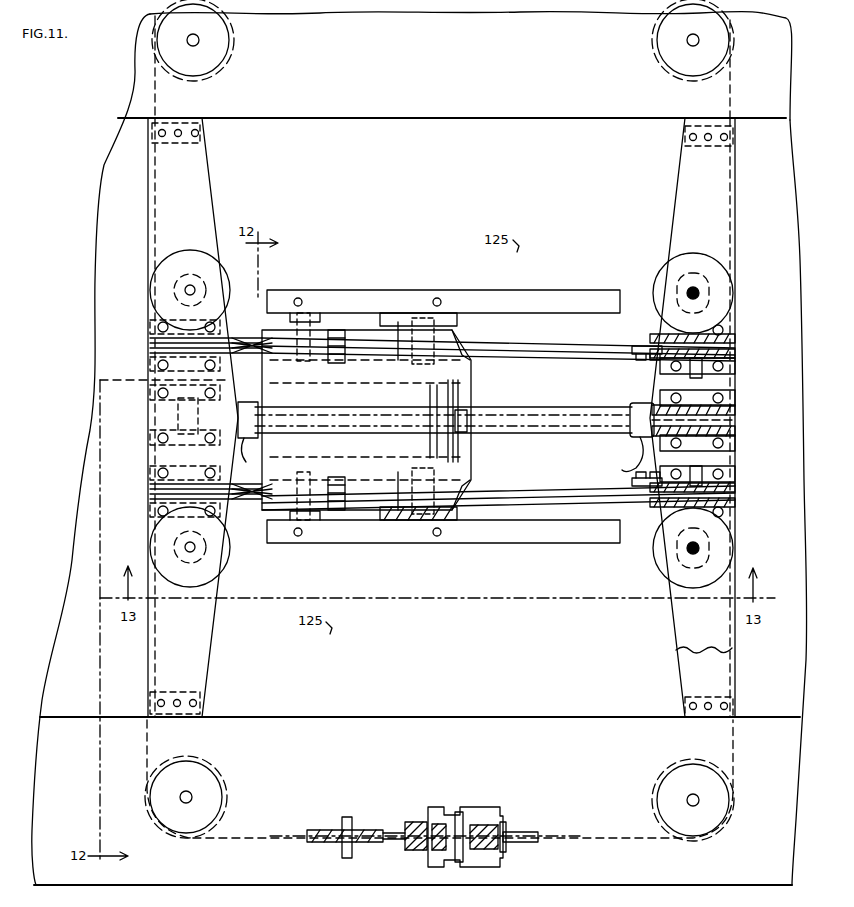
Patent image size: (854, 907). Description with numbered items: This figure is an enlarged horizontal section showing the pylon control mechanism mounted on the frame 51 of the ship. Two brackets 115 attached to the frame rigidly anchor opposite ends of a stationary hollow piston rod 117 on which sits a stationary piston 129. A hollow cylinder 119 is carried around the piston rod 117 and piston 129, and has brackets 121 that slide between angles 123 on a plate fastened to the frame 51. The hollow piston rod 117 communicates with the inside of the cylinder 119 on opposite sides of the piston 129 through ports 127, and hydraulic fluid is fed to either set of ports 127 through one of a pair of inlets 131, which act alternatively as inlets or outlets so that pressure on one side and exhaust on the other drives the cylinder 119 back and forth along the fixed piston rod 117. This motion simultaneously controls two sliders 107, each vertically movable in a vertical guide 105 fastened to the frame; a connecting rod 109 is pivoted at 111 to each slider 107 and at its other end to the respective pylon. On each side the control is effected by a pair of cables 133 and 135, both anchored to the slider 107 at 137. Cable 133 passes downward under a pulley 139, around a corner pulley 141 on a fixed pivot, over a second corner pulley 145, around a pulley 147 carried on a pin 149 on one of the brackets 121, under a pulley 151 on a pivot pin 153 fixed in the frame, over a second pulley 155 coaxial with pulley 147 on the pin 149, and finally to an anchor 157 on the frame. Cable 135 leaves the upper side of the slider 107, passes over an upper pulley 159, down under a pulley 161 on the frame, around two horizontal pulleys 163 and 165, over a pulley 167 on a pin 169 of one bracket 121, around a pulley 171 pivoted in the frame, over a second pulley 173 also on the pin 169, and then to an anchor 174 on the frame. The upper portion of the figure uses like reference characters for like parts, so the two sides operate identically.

The frame 51 is at (446, 120).
The vertical guide 105 is at (408, 822).
The slider 107 is at (478, 812).
The connecting rod 109 is at (504, 842).
The pivot 111 is at (490, 818).
The bracket 115 is at (150, 437).
The hollow piston rod 117 is at (545, 408).
The hollow cylinder 119 is at (356, 392).
The bracket 121 is at (398, 322).
The angle 123 is at (352, 297).
The port 127 is at (420, 420).
The piston 129 is at (470, 396).
The inlet 131 is at (262, 450).
The cable 133 is at (737, 220).
The cable 135 is at (153, 190).
The anchor 137 is at (460, 812).
The pulley 139 is at (522, 832).
The corner pulley 141 is at (660, 66).
The second corner pulley 145 is at (690, 262).
The pulley 147 is at (468, 322).
The pin 149 is at (416, 318).
The pulley 151 is at (736, 340).
The pivot pin 153 is at (702, 372).
The second pulley 155 is at (466, 356).
The anchor 157 is at (630, 354).
The upper pulley 159 is at (398, 842).
The pulley 161 is at (360, 826).
The horizontal pulley 163 is at (222, 62).
The horizontal pulley 165 is at (224, 284).
The pulley 167 is at (325, 322).
The pin 169 is at (302, 296).
The pulley 171 is at (150, 343).
The second pulley 173 is at (352, 336).
The anchor 174 is at (258, 358).